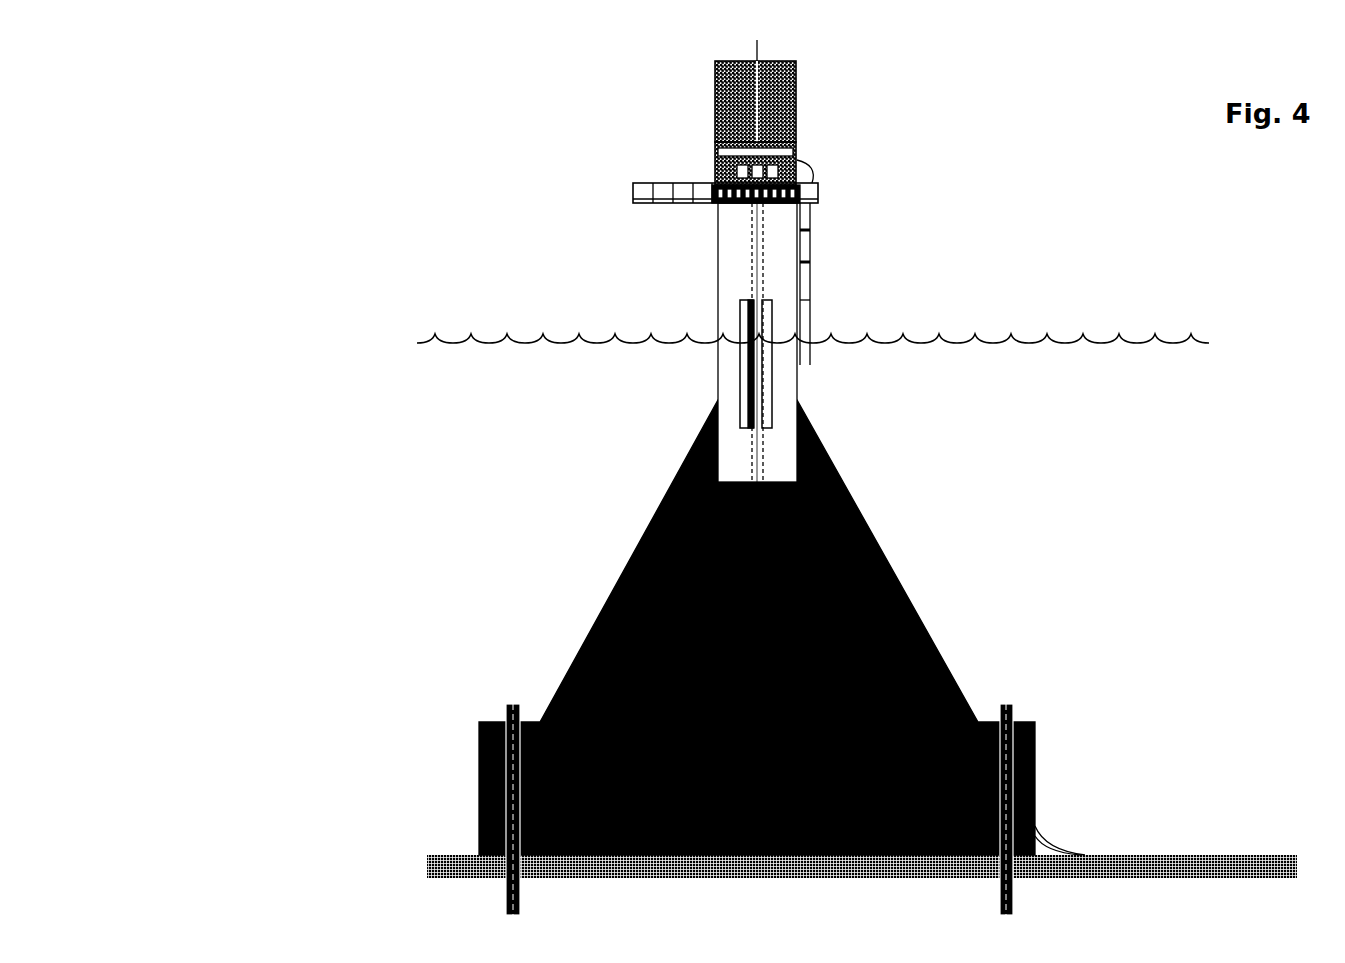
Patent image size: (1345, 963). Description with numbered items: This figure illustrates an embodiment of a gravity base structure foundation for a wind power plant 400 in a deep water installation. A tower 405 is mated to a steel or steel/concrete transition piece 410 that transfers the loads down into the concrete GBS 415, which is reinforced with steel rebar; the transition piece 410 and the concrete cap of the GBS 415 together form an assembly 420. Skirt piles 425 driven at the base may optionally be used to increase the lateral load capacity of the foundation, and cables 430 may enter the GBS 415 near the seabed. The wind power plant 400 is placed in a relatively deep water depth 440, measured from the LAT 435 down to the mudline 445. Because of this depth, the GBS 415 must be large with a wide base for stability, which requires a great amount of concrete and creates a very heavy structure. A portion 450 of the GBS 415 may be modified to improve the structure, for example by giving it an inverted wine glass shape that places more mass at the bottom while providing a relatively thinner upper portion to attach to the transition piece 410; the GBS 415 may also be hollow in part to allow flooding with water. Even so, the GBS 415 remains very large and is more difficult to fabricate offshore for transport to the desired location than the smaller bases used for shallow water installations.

The wind power plant 400 is at (360, 202).
The tower 405 is at (800, 113).
The transition piece 410 is at (712, 269).
The GBS 415 is at (910, 587).
The assembly 420 is at (820, 426).
The skirt piles 425 is at (521, 917).
The cables 430 is at (1149, 806).
The LAT 435 is at (783, 359).
The water depth 440 is at (179, 866).
The mudline 445 is at (812, 870).
The portion of the GBS 450 is at (565, 402).